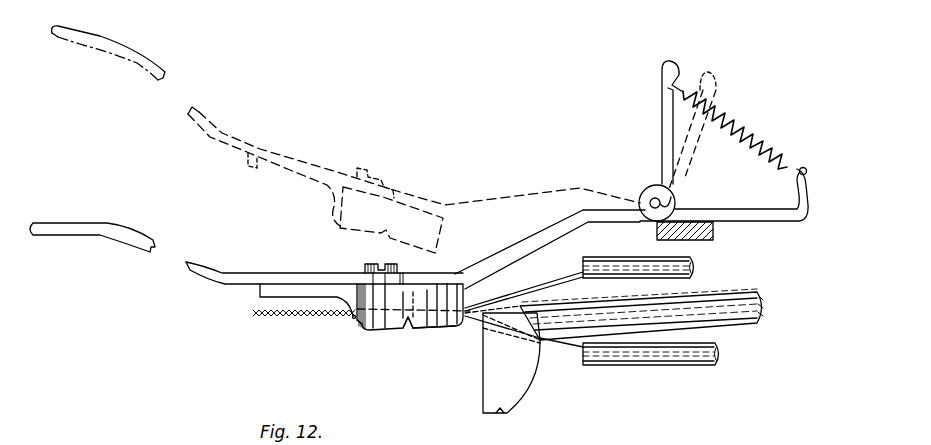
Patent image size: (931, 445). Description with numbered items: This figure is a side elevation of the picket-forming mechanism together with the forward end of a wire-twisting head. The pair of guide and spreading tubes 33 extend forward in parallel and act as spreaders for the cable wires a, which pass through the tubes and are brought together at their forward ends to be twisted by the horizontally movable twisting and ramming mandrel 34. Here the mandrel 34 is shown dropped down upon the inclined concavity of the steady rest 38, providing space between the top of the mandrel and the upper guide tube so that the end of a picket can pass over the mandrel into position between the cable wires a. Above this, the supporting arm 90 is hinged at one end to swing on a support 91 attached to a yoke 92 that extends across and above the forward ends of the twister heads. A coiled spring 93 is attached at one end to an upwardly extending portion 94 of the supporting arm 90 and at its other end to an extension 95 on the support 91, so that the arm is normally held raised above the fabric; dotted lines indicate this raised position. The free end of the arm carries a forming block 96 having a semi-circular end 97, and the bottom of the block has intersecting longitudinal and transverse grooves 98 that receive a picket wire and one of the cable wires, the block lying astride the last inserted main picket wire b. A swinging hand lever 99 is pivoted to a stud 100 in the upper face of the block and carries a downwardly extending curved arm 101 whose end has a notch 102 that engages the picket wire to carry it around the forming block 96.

The guide and spreading tubes 33 is at (607, 265).
The twisting and ramming mandrel 34 is at (575, 327).
The steady rest 38 is at (502, 367).
The supporting arm 90 is at (520, 250).
The support 91 is at (724, 212).
The yoke 92 is at (712, 239).
The coiled spring 93 is at (737, 127).
The upwardly extending portion 94 is at (664, 131).
The extension 95 is at (803, 165).
The forming block 96 is at (440, 280).
The semi-circular end 97 is at (357, 330).
The intersecting longitudinal and transverse grooves 98 is at (410, 316).
The swinging hand lever 99 is at (233, 280).
The stud 100 is at (377, 264).
The downwardly extending curved arm 101 is at (327, 292).
The notch 102 is at (355, 316).
The cable wires a is at (536, 282).
The main picket wires b is at (407, 320).